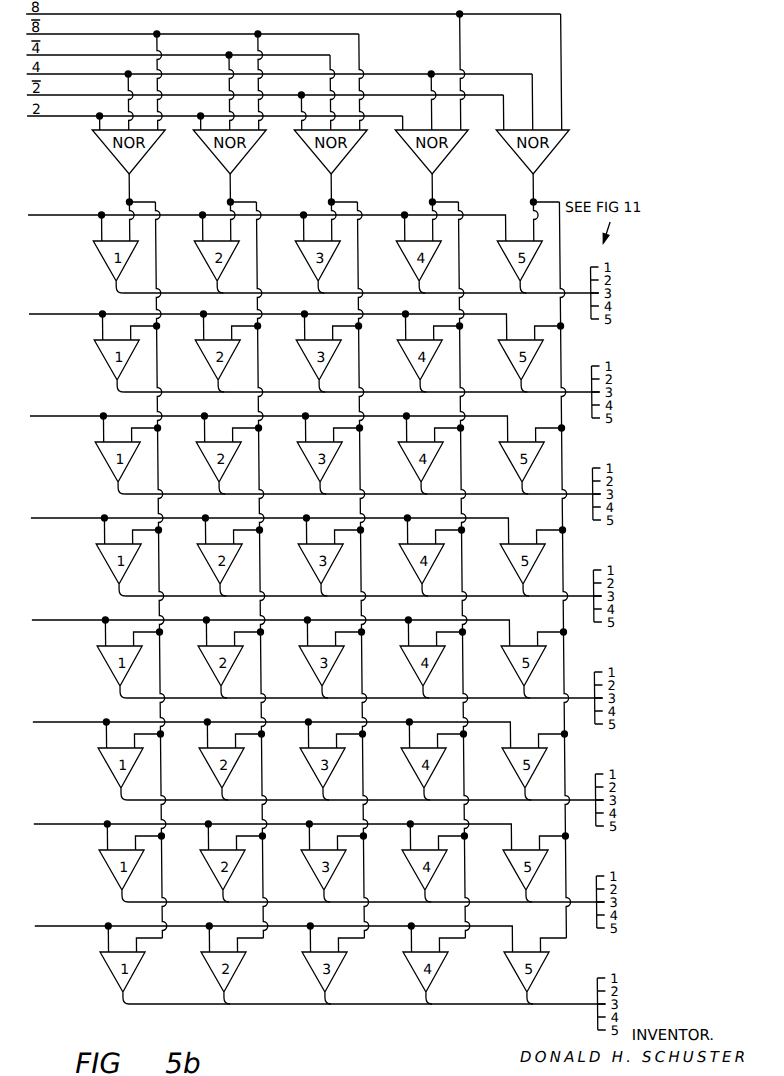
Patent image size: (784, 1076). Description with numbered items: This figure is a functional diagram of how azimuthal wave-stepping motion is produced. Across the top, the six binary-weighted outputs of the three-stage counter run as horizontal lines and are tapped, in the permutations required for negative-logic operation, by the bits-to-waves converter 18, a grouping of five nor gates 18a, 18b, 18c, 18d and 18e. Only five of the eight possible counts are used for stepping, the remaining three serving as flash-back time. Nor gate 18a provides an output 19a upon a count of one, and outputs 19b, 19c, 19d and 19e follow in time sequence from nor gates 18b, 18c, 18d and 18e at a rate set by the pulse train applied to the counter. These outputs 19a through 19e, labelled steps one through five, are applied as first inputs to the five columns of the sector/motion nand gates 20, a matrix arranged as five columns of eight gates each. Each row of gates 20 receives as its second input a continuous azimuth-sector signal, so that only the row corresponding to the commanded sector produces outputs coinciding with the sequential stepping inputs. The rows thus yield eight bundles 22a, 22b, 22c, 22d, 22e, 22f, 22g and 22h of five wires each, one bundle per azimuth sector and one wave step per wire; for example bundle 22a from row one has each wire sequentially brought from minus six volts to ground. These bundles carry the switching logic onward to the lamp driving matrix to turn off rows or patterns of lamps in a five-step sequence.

The bits-to-waves converter 18 is at (312, 92).
The nor gate 18a is at (147, 149).
The nor gate 18b is at (248, 149).
The nor gate 18c is at (349, 149).
The nor gate 18d is at (450, 149).
The nor gate 18e is at (551, 149).
The output 19a is at (127, 196).
The output 19b is at (228, 196).
The output 19c is at (329, 196).
The output 19d is at (430, 196).
The output 19e is at (531, 196).
The sector/motion nand gates 20 is at (326, 1039).
The output bundle 22a is at (664, 305).
The output bundle 22b is at (664, 404).
The output bundle 22c is at (664, 506).
The output bundle 22d is at (664, 608).
The output bundle 22e is at (664, 710).
The output bundle 22f is at (664, 812).
The output bundle 22g is at (664, 914).
The output bundle 22h is at (664, 1016).